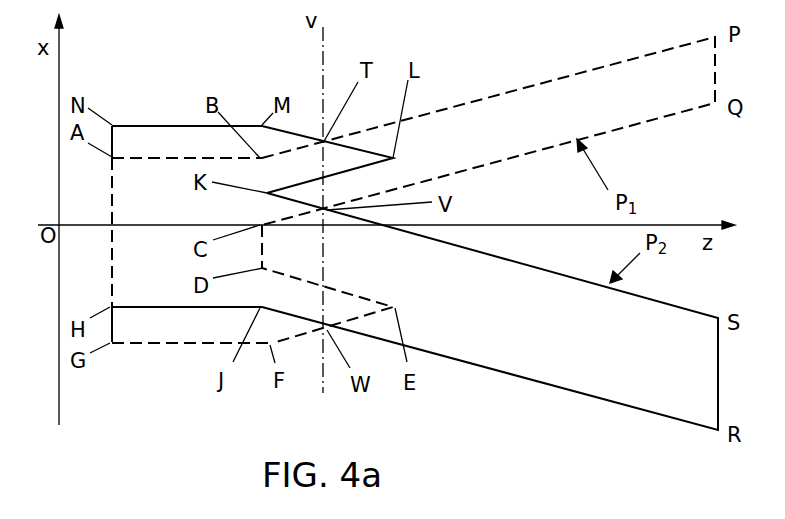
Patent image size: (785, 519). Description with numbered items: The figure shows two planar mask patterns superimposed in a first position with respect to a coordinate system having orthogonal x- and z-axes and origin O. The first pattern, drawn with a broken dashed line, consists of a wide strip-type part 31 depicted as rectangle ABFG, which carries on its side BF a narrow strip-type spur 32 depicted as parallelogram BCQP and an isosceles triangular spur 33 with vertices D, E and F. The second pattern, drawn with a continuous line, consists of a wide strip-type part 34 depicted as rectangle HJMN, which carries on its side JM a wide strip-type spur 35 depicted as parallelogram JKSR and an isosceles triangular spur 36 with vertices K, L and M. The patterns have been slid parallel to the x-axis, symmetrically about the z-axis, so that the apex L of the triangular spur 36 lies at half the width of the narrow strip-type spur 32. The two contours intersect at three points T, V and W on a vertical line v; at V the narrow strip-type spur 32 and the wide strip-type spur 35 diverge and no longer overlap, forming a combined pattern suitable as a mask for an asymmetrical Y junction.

The wide strip-type part 31 is at (167, 327).
The narrow strip-type spur 32 is at (548, 107).
The triangular spur 33 is at (282, 322).
The wide strip-type part 34 is at (148, 147).
The wide strip-type spur 35 is at (490, 342).
The triangular spur 36 is at (310, 167).